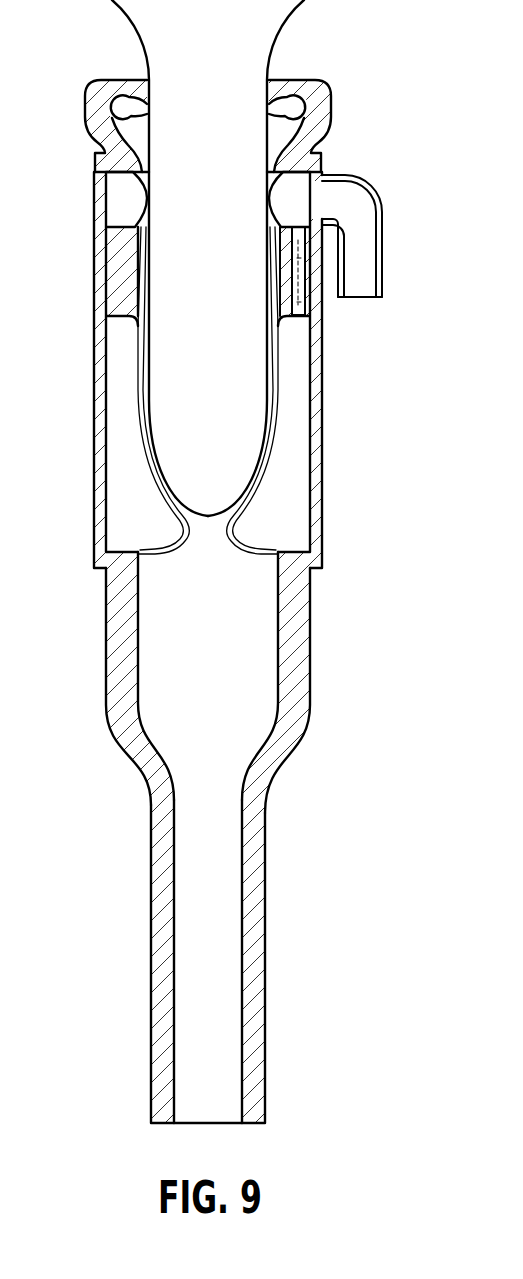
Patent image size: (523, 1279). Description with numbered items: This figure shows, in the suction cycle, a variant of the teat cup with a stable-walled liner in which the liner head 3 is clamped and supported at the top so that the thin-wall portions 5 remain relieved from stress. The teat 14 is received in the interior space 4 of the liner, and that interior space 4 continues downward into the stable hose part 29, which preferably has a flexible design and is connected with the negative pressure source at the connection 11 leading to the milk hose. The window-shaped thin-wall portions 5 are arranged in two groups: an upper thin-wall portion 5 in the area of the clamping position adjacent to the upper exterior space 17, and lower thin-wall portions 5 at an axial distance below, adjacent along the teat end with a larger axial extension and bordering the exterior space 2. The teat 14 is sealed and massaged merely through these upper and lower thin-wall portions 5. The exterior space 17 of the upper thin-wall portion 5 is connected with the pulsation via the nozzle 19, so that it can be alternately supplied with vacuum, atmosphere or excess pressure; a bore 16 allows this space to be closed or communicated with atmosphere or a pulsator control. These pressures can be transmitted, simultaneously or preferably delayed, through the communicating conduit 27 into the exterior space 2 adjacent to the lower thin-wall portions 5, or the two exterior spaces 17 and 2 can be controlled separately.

The exterior space 2 is at (137, 521).
The liner head 3 is at (292, 104).
The interior space 4 is at (185, 680).
The thin-wall portion 5 is at (149, 175).
The connection 11 is at (264, 1010).
The teat 14 is at (220, 385).
The bore 16 is at (297, 268).
The exterior space 17 is at (317, 151).
The nozzle 19 is at (383, 246).
The communicating conduit 27 is at (297, 302).
The hose part 29 is at (308, 682).